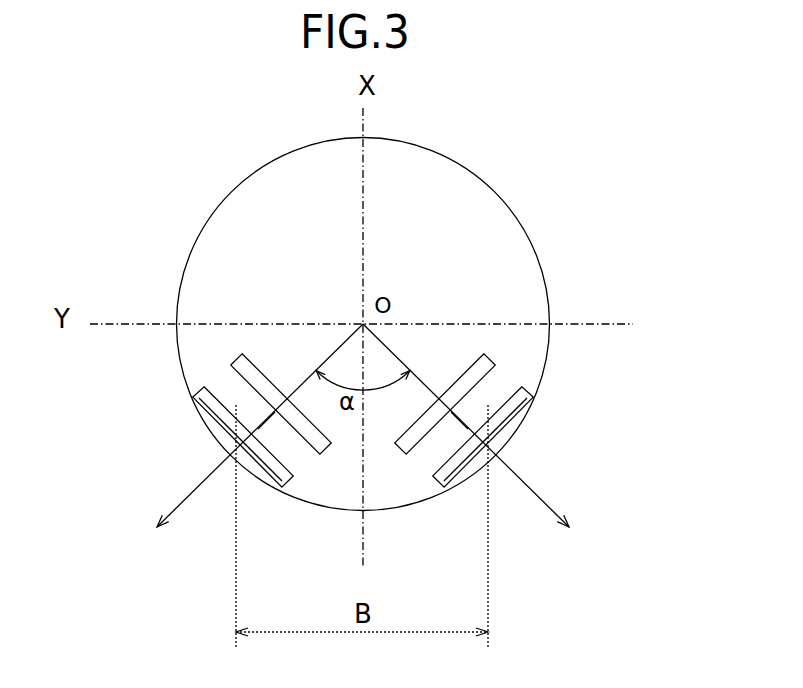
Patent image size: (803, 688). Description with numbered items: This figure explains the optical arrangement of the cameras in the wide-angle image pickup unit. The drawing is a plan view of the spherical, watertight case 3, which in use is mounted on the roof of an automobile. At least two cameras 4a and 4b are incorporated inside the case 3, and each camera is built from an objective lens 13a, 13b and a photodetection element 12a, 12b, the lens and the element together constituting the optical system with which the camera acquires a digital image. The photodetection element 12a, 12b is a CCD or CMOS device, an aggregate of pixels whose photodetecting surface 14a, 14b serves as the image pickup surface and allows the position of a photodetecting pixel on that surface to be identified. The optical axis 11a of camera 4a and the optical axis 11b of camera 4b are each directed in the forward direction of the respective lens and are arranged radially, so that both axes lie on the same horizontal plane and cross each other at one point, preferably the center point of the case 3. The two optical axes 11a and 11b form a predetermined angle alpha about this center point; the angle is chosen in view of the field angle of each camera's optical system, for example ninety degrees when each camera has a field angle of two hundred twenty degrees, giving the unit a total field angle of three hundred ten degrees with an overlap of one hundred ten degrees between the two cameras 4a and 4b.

The case 3 is at (483, 177).
The camera 4a is at (516, 422).
The camera 4b is at (210, 424).
The optical axis 11a is at (543, 498).
The optical axis 11b is at (192, 490).
The photodetection element 12a is at (492, 358).
The photodetection element 12b is at (234, 356).
The objective lens 13a is at (433, 492).
The objective lens 13b is at (293, 492).
The photodetecting surface 14a is at (423, 438).
The photodetecting surface 14b is at (303, 438).